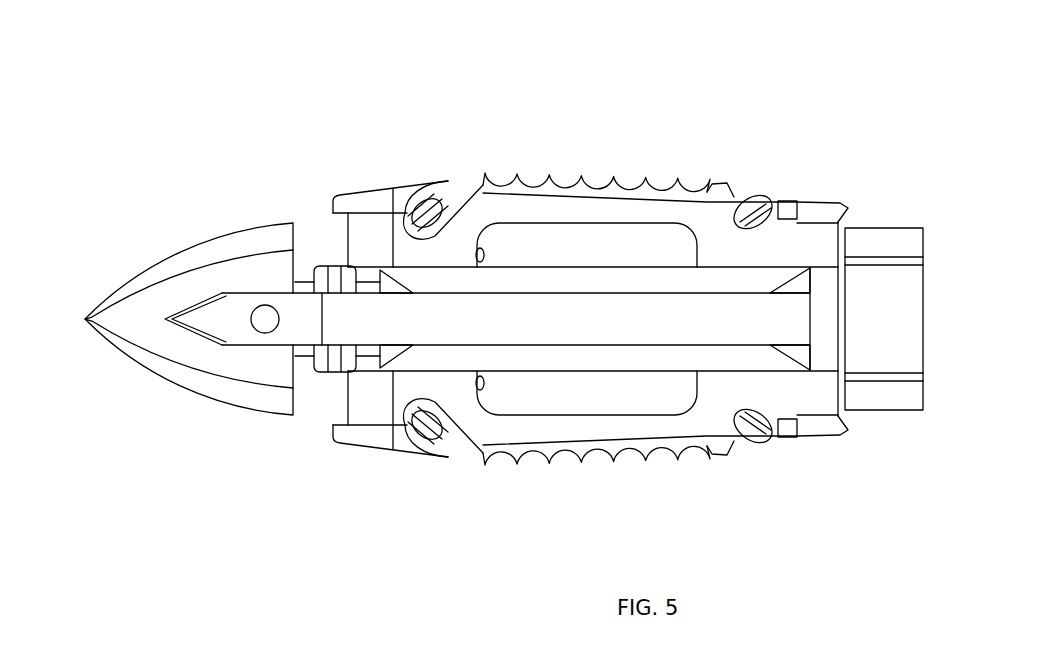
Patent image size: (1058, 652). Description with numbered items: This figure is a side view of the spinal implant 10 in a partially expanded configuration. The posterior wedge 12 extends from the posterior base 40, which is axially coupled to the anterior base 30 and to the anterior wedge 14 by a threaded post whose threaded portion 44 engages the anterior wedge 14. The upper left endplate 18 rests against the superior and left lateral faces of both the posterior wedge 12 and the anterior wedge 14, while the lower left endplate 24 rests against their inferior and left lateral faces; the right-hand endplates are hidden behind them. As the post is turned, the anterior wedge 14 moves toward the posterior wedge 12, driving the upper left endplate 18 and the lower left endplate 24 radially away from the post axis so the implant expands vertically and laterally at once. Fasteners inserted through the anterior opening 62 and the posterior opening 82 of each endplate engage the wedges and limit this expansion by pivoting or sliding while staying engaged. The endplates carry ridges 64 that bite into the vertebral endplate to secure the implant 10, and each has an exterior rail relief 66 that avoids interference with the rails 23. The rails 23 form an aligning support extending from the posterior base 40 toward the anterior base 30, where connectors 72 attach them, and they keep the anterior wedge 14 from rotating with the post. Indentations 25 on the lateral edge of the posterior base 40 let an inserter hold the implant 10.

The spinal implant 10 is at (243, 108).
The posterior wedge 12 is at (800, 362).
The anterior wedge 14 is at (372, 273).
The upper left endplate 18 is at (716, 228).
The rails 23 is at (635, 341).
The lower left endplate 24 is at (361, 455).
The indentations 25 is at (879, 353).
The anterior base 30 is at (112, 275).
The posterior base 40 is at (904, 217).
The threaded portion 44 is at (321, 258).
The anterior opening 62 is at (456, 188).
The ridges 64 is at (608, 162).
The exterior rail relief 66 is at (420, 370).
The connectors 72 is at (243, 334).
The posterior opening 82 is at (736, 198).